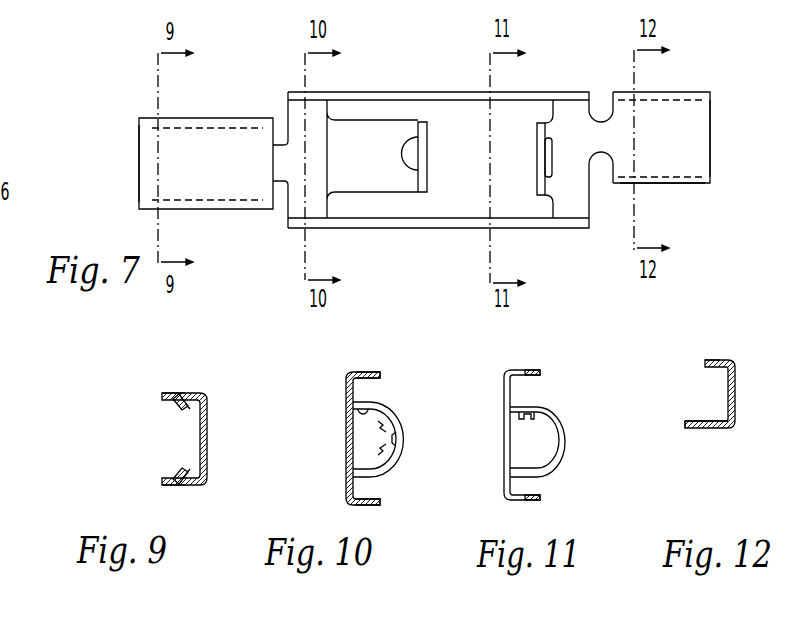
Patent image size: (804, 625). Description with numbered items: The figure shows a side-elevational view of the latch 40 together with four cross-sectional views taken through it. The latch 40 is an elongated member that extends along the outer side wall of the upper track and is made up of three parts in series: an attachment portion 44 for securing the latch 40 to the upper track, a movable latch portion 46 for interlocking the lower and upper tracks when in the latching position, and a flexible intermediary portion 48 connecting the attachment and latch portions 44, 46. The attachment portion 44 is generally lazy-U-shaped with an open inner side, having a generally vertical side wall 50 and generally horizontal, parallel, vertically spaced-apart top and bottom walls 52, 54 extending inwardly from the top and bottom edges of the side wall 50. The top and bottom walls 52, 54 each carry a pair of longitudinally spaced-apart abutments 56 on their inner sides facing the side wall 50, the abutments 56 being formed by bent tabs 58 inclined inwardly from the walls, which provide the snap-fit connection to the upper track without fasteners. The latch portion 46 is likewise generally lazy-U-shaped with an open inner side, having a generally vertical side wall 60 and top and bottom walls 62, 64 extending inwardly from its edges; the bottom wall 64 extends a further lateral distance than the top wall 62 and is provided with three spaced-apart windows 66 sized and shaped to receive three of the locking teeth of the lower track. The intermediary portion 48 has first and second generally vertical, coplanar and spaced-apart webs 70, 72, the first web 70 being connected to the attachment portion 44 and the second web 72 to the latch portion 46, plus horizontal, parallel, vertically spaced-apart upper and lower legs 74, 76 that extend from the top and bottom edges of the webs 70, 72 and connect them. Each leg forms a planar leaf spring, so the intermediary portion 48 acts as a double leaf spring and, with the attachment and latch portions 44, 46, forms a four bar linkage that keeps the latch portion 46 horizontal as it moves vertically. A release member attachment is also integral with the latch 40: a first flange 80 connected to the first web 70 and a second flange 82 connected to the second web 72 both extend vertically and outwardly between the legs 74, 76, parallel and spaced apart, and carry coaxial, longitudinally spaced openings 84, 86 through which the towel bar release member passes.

In FIG. 7, the latch 40 is at (719, 224).
In FIG. 9, the latch 40 is at (91, 434).
In FIG. 10, the latch 40 is at (330, 434).
In FIG. 11, the latch 40 is at (582, 371).
In FIG. 12, the latch 40 is at (746, 467).
In FIG. 7, the attachment portion 44 is at (136, 188).
In FIG. 7, the movable latch portion 46 is at (716, 152).
In FIG. 7, the flexible intermediary portion 48 is at (456, 233).
In FIG. 7, the side wall 50 is at (139, 152).
In FIG. 9, the side wall 50 is at (208, 432).
In FIG. 7, the top wall 52 is at (220, 117).
In FIG. 9, the top wall 52 is at (160, 396).
In FIG. 7, the bottom wall 54 is at (221, 213).
In FIG. 9, the bottom wall 54 is at (162, 484).
In FIG. 9, the abutments 56 is at (189, 411).
In FIG. 9, the bent tabs 58 is at (183, 407).
In FIG. 7, the side wall 60 is at (713, 127).
In FIG. 12, the side wall 60 is at (737, 386).
In FIG. 7, the top wall 62 is at (712, 103).
In FIG. 12, the top wall 62 is at (713, 360).
In FIG. 7, the bottom wall 64 is at (700, 168).
In FIG. 12, the bottom wall 64 is at (685, 426).
In FIG. 7, the windows 66 is at (690, 184).
In FIG. 12, the windows 66 is at (704, 420).
In FIG. 7, the first web 70 is at (330, 219).
In FIG. 7, the second web 72 is at (552, 207).
In FIG. 7, the upper leg 74 is at (474, 92).
In FIG. 10, the upper leg 74 is at (358, 372).
In FIG. 11, the upper leg 74 is at (528, 370).
In FIG. 7, the lower leg 76 is at (483, 219).
In FIG. 10, the lower leg 76 is at (368, 506).
In FIG. 11, the lower leg 76 is at (533, 501).
In FIG. 7, the first flange 80 is at (428, 187).
In FIG. 10, the first flange 80 is at (398, 464).
In FIG. 7, the second flange 82 is at (535, 190).
In FIG. 11, the second flange 82 is at (562, 456).
In FIG. 7, the opening 84 is at (415, 137).
In FIG. 10, the opening 84 is at (367, 408).
In FIG. 7, the opening 86 is at (542, 137).
In FIG. 11, the opening 86 is at (548, 437).